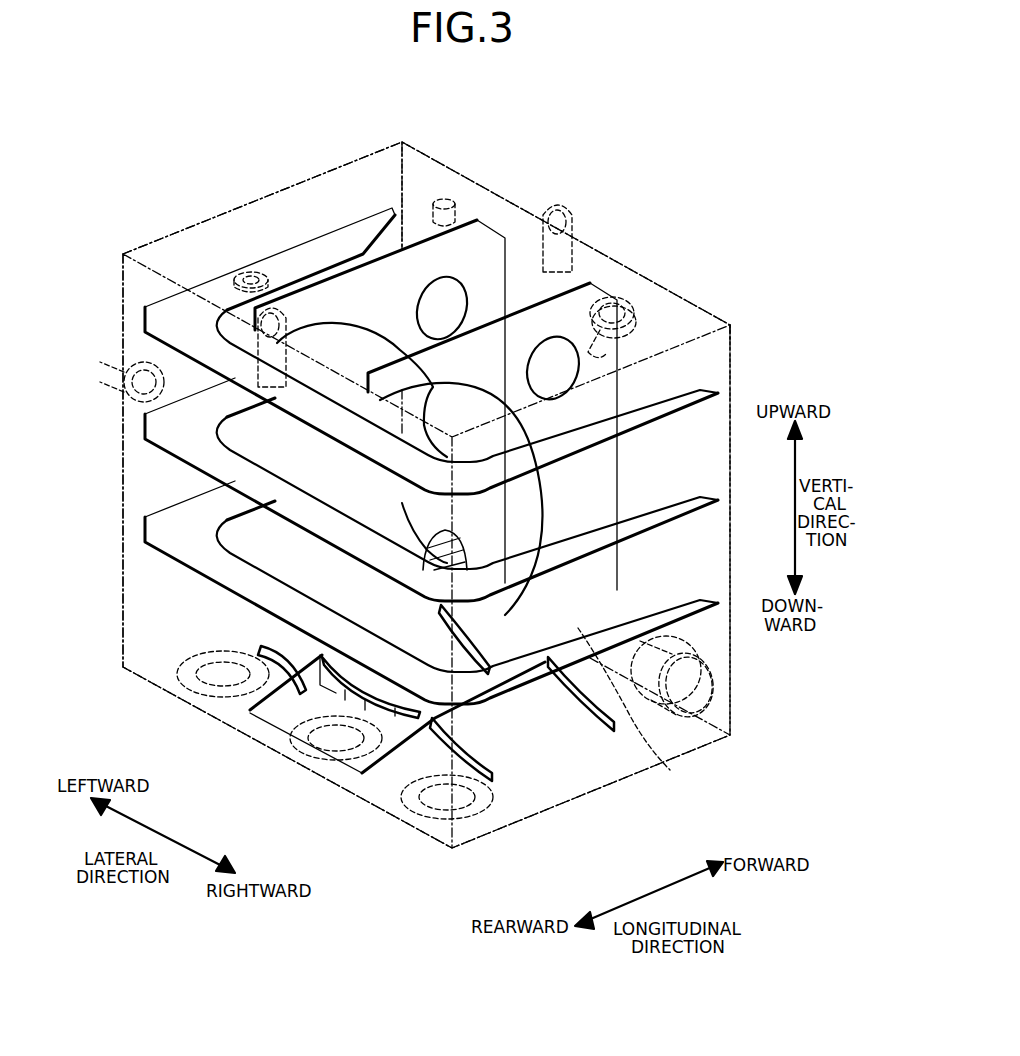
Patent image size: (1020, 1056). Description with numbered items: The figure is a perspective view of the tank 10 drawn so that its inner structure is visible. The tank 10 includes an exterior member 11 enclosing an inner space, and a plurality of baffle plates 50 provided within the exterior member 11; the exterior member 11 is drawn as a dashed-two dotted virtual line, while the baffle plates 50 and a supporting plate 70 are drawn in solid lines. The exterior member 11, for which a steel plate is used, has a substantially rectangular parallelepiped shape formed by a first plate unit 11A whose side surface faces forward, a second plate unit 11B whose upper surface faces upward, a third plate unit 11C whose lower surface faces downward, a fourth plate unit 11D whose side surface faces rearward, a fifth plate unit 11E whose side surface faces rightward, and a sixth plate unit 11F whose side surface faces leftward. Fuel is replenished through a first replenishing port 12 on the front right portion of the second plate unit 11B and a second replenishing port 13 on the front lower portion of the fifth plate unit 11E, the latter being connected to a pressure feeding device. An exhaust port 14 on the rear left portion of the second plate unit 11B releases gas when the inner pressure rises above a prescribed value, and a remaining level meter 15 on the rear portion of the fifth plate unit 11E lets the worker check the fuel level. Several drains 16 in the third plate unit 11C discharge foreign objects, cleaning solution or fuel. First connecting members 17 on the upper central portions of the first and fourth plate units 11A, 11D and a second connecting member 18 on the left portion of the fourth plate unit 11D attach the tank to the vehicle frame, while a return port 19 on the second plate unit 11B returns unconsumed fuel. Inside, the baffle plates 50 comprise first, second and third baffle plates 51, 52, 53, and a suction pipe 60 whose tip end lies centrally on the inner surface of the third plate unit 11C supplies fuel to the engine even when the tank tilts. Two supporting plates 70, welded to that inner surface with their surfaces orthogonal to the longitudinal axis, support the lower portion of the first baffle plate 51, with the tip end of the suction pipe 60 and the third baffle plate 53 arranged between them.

The tank 10 is at (659, 199).
The exterior member 11 is at (698, 312).
The first plate unit 11A is at (686, 470).
The second plate unit 11B is at (586, 272).
The third plate unit 11C is at (566, 800).
The fourth plate unit 11D is at (152, 612).
The fifth plate unit 11E is at (686, 575).
The sixth plate unit 11F is at (176, 258).
The first replenishing port 12 is at (631, 302).
The second replenishing port 13 is at (717, 666).
The exhaust port 14 is at (250, 278).
The remaining level meter 15 is at (670, 770).
The drain 16 is at (445, 820).
The first connecting member 17 is at (272, 300).
The second connecting member 18 is at (122, 376).
The return port 19 is at (444, 200).
The baffle plate 50 is at (430, 486).
The first baffle plate 51 is at (488, 246).
The second baffle plate 52 is at (146, 319).
The third baffle plate 53 is at (455, 660).
The suction pipe 60 is at (333, 600).
The supporting plate 70 is at (437, 760).